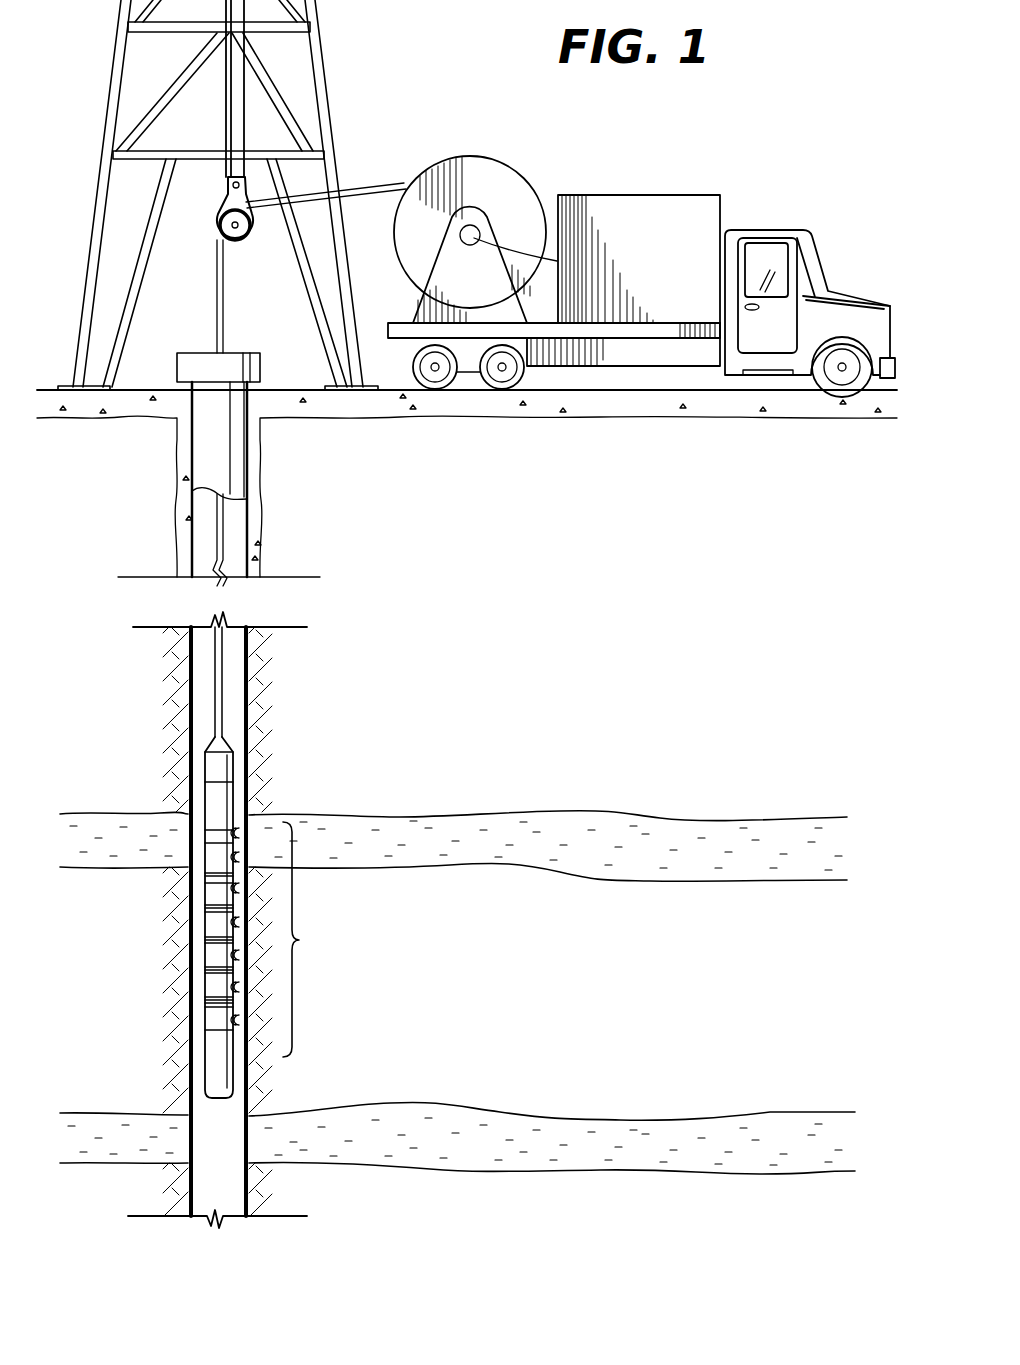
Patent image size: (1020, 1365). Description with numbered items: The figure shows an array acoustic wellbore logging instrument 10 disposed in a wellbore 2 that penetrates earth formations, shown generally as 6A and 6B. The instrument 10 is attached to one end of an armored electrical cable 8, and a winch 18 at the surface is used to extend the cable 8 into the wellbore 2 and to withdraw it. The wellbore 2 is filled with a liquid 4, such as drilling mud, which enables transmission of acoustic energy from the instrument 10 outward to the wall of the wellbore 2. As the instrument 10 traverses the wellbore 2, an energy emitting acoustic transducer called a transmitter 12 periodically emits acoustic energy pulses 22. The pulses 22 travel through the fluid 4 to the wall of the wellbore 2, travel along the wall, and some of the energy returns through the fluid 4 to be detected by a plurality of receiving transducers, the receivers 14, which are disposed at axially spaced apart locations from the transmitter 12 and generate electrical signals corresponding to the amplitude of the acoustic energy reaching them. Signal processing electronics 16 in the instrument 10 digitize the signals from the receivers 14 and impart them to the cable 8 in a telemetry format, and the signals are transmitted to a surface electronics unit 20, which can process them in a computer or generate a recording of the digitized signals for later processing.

The wellbore 2 is at (207, 664).
The liquid 4 is at (207, 1142).
The earth formation 6A is at (540, 820).
The earth formation 6B is at (538, 1125).
The armored electrical cable 8 is at (215, 716).
The acoustic array wellbore logging instrument 10 is at (207, 804).
The transmitter 12 is at (207, 832).
The receivers 14 is at (150, 880).
The signal processing electronics 16 is at (207, 775).
The winch 18 is at (474, 157).
The surface electronics unit 20 is at (632, 195).
The acoustic energy pulses 22 is at (311, 939).